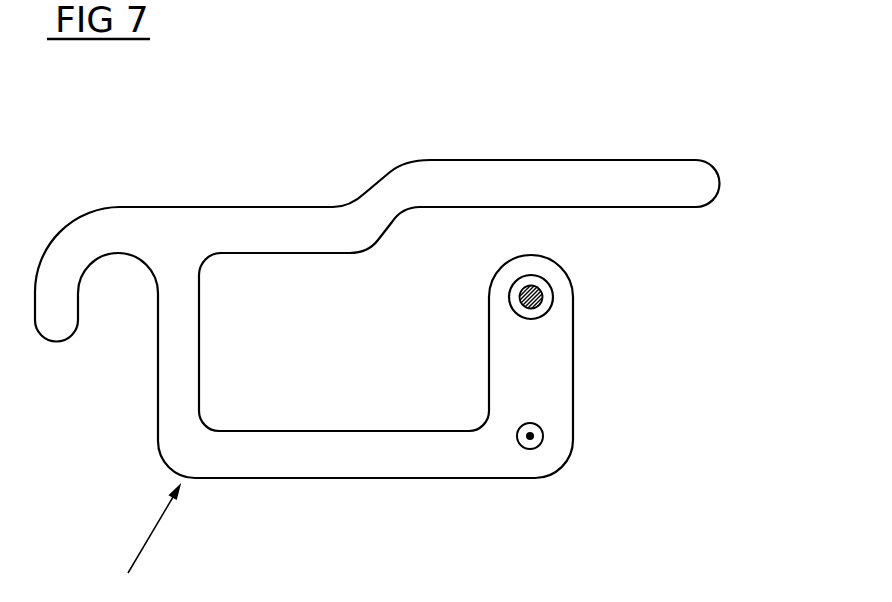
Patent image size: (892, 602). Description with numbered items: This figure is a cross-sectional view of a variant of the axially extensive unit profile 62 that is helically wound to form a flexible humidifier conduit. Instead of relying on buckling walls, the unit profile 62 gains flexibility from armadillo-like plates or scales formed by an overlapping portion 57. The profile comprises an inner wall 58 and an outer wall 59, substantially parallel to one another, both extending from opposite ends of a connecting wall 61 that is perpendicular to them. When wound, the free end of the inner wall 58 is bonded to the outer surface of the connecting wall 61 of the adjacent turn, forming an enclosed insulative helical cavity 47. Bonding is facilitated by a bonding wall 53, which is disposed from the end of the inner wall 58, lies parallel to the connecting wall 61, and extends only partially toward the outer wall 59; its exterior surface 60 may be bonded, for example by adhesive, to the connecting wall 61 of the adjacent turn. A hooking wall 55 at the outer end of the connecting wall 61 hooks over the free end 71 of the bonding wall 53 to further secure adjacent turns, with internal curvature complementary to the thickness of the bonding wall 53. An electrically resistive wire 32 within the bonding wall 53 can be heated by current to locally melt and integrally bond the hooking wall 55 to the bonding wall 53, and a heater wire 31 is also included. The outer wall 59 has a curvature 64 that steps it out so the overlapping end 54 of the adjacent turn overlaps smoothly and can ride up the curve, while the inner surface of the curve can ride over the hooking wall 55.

The hooking wall 55 is at (72, 253).
The overlapping portion 57 is at (553, 173).
The overlapping end 54 is at (700, 172).
The outer wall 59 is at (340, 225).
The curvature 64 is at (402, 210).
The free end of bonding wall 71 is at (528, 262).
The electrically resistive wire 32 is at (543, 295).
The bonding wall 53 is at (546, 350).
The exterior surface 60 is at (578, 380).
The heater wire 31 is at (543, 433).
The connecting wall 61 is at (172, 355).
The unit profile 62 is at (138, 543).
The helical cavity 47 is at (343, 395).
The inner wall 58 is at (400, 485).